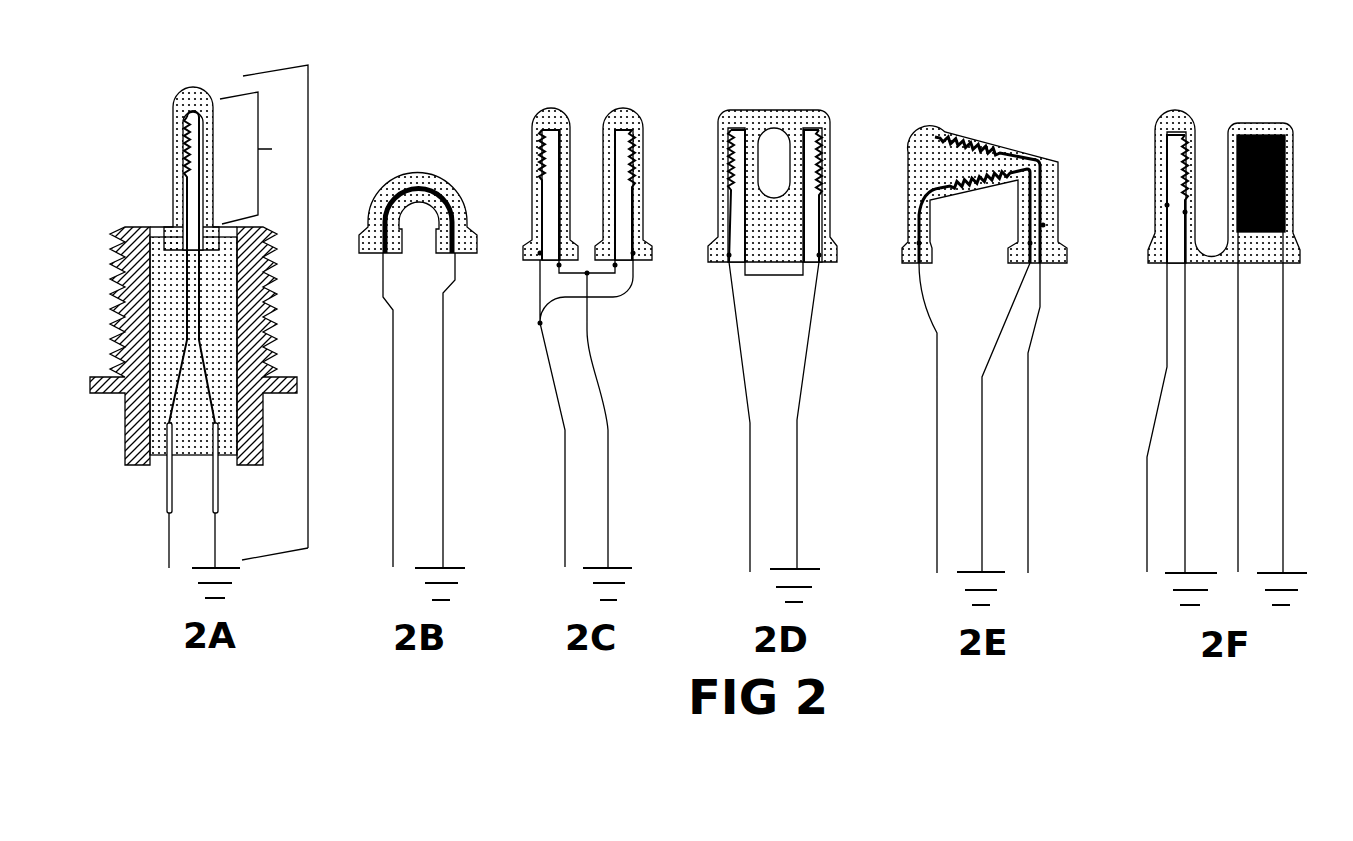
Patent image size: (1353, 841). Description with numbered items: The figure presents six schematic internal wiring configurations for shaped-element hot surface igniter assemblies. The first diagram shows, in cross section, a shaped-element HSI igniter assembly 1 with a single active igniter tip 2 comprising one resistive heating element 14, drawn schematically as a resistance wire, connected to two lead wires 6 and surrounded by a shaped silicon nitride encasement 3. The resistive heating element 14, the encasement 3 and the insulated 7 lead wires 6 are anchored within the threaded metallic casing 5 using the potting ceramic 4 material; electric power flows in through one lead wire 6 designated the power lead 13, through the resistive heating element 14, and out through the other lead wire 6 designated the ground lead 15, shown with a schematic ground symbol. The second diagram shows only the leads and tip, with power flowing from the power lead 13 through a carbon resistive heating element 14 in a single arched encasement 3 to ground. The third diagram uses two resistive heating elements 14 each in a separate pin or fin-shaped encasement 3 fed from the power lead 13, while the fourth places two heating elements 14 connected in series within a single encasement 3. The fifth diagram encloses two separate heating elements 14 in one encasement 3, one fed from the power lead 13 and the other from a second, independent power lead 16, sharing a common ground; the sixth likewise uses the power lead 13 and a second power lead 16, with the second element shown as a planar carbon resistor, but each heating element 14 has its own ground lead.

The shaped-element HSI igniter assembly 1 is at (308, 112).
The active igniter tip 2 is at (256, 158).
The silicon nitride encasement 3 is at (170, 193).
The potting ceramic 4 is at (160, 302).
The threaded metallic casing 5 is at (248, 242).
The lead wires 6 is at (205, 538).
The insulation 7 is at (215, 483).
The power lead 13 is at (162, 573).
The resistive heating element 14 is at (188, 150).
The ground lead 15 is at (233, 577).
The second power lead 16 is at (1158, 422).